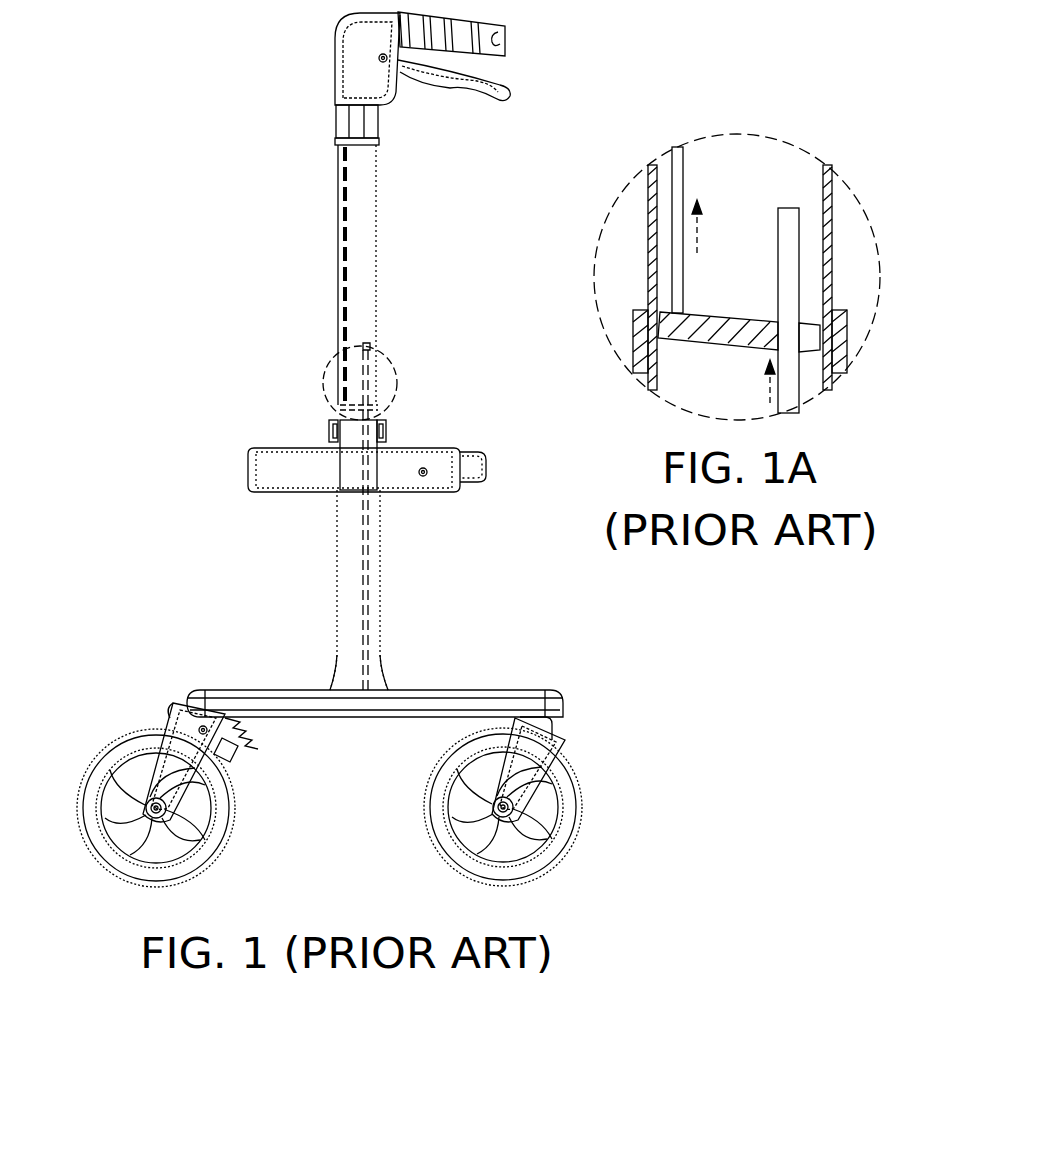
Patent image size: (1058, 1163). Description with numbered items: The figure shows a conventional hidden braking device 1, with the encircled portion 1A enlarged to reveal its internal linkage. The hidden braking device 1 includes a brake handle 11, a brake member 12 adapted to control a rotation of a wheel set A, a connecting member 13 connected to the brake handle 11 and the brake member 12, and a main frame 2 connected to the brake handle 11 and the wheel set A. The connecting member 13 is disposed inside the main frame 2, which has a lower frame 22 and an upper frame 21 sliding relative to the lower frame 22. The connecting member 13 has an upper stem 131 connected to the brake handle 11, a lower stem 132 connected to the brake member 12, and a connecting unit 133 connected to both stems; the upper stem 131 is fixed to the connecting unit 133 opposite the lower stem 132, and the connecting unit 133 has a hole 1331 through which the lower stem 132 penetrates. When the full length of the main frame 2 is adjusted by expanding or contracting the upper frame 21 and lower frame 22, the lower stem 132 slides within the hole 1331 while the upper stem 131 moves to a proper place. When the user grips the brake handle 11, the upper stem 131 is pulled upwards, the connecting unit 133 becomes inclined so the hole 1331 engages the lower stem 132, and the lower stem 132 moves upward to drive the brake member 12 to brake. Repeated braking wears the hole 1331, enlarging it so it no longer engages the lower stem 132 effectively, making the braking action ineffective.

In FIG. 1, the hidden braking device 1 is at (233, 445).
In FIG. 1, the encircled portion 1A is at (396, 376).
In FIG. 1, the main frame 2 is at (378, 258).
In FIG. 1, the brake handle 11 is at (495, 100).
In FIG. 1, the brake member 12 is at (245, 745).
In FIG. 1, the connecting member 13 is at (340, 300).
In FIG. 1, the upper stem 131 is at (342, 227).
In FIG. 1A, the upper stem 131 is at (678, 167).
In FIG. 1A, the lower stem 132 is at (790, 377).
In FIG. 1A, the connecting unit 133 is at (695, 340).
In FIG. 1A, the hole 1331 is at (800, 330).
In FIG. 1, the upper frame 21 is at (362, 217).
In FIG. 1A, the upper frame 21 is at (831, 187).
In FIG. 1, the lower frame 22 is at (348, 568).
In FIG. 1, the wheel set A is at (96, 758).